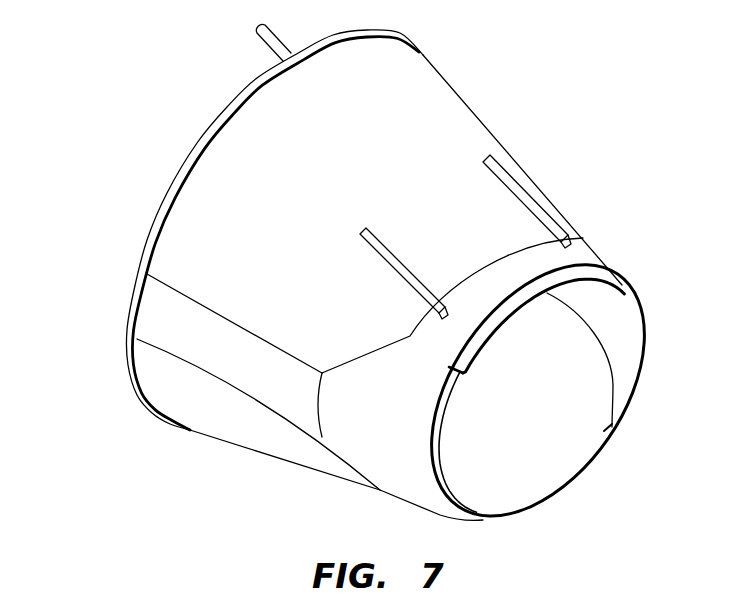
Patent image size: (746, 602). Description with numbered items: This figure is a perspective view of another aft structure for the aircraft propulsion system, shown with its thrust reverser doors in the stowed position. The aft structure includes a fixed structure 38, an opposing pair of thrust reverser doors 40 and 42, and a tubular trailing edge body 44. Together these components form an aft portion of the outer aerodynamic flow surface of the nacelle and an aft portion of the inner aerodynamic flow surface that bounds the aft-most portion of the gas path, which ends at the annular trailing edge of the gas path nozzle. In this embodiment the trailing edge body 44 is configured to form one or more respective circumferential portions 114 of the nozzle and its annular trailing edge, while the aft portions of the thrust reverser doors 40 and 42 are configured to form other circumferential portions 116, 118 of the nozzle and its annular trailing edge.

The fixed structure 38 is at (115, 346).
The thrust reverser door 40 is at (462, 92).
The thrust reverser door 42 is at (223, 460).
The trailing edge body 44 is at (638, 268).
The circumferential portion 114 is at (415, 493).
The circumferential portion 116 is at (595, 264).
The circumferential portion 118 is at (547, 463).